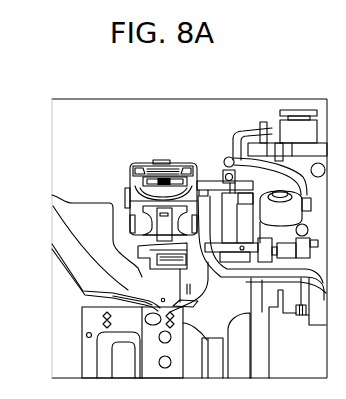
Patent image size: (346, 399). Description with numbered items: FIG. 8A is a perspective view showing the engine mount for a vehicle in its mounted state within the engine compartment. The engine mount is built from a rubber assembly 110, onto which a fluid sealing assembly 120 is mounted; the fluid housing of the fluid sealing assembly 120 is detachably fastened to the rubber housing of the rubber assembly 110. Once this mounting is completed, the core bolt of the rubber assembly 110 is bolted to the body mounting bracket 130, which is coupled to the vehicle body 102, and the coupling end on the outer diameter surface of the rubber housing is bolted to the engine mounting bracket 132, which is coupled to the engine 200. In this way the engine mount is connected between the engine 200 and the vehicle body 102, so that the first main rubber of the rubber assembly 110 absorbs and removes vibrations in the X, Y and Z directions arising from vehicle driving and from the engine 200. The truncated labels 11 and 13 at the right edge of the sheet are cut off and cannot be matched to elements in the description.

The vehicle body 102 is at (85, 221).
The rubber assembly 110 is at (118, 220).
The fluid sealing assembly 120 is at (185, 157).
The body mounting bracket 130 is at (146, 255).
The engine mounting bracket 132 is at (205, 181).
The engine 200 is at (252, 131).
The component (partially visible) 11 is at (340, 241).
The component (partially visible) 13 is at (340, 292).